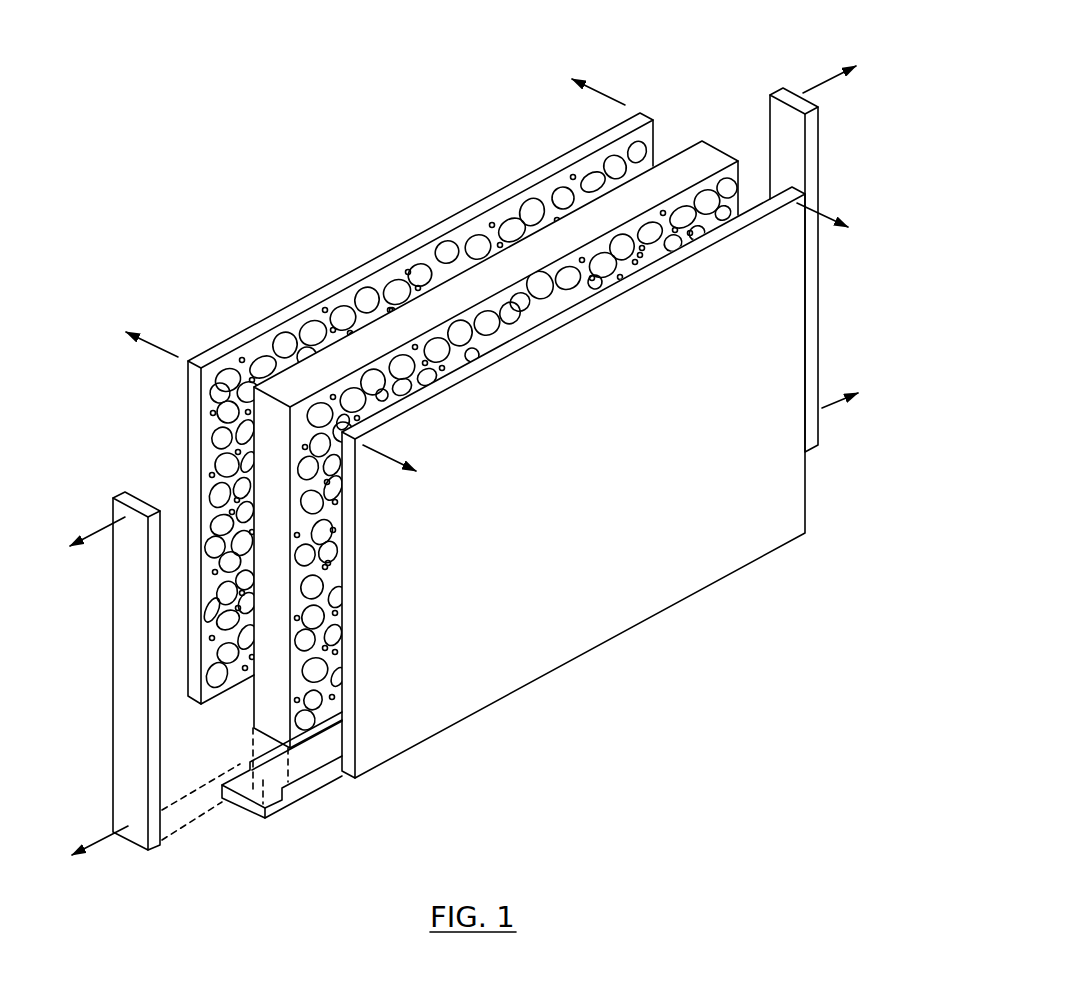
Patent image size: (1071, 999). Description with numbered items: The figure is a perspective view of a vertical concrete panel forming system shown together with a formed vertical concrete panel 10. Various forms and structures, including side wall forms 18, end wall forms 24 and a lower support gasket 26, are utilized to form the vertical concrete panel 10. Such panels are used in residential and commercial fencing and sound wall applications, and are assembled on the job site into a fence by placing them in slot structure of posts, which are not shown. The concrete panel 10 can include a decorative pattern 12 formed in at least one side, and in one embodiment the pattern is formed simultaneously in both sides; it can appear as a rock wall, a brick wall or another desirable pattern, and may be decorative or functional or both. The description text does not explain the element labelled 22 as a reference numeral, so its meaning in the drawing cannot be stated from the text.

The vertical concrete panel 10 is at (307, 377).
The decorative pattern 12 is at (554, 265).
The side wall form 18 is at (232, 343).
The perforated facing surface 22 is at (421, 254).
The end wall form 24 is at (130, 498).
The lower support gasket 26 is at (250, 808).